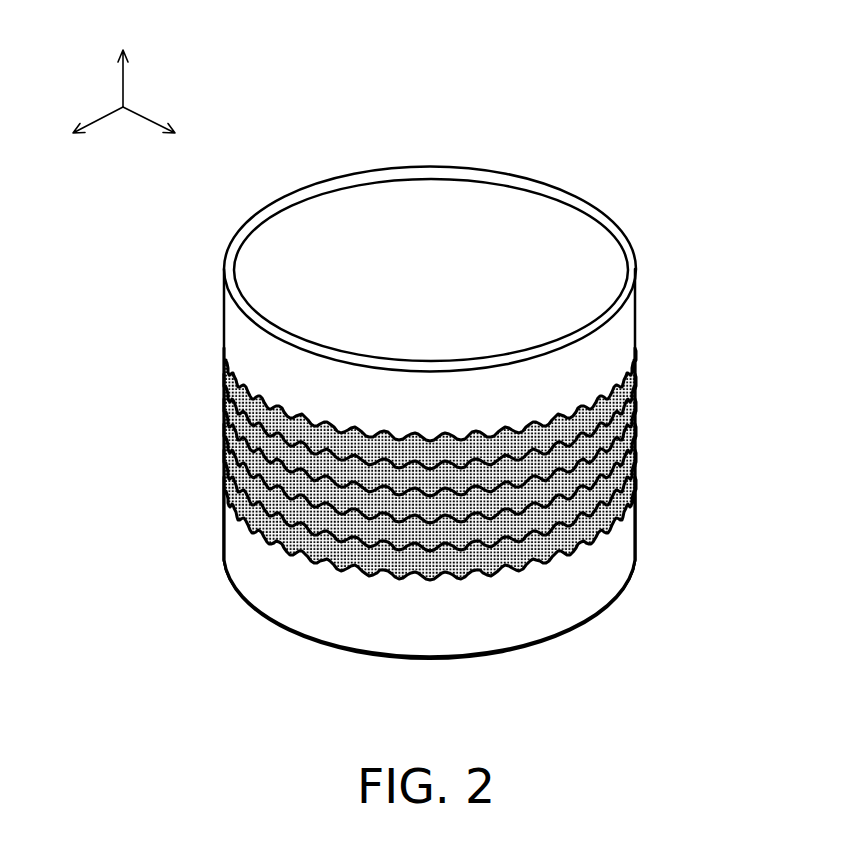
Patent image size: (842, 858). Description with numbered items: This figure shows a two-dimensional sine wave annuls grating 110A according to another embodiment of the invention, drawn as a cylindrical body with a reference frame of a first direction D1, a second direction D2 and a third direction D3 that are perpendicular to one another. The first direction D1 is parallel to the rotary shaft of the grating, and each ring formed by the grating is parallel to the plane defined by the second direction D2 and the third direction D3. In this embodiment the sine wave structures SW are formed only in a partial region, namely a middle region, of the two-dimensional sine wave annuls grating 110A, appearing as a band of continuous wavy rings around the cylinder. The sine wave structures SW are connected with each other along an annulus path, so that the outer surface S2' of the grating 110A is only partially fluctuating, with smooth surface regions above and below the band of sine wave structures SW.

The two-dimensional sine wave annuls grating 110A is at (758, 683).
The sine wave structures SW is at (641, 444).
The second surface S2' is at (468, 269).
The first direction D1 is at (124, 59).
The second direction D2 is at (78, 134).
The third direction D3 is at (167, 134).